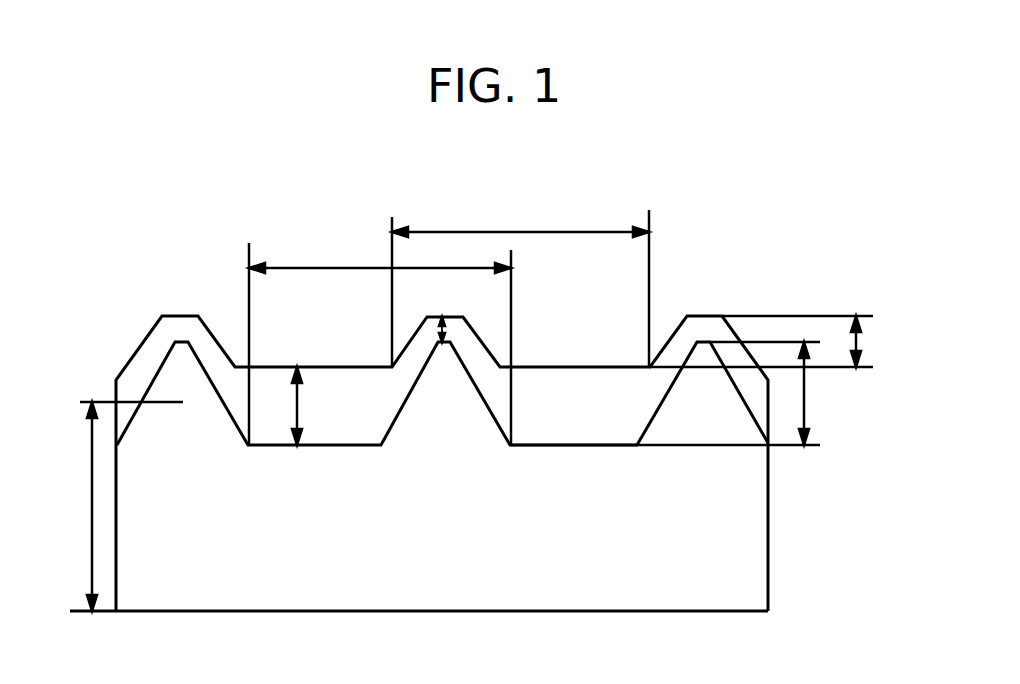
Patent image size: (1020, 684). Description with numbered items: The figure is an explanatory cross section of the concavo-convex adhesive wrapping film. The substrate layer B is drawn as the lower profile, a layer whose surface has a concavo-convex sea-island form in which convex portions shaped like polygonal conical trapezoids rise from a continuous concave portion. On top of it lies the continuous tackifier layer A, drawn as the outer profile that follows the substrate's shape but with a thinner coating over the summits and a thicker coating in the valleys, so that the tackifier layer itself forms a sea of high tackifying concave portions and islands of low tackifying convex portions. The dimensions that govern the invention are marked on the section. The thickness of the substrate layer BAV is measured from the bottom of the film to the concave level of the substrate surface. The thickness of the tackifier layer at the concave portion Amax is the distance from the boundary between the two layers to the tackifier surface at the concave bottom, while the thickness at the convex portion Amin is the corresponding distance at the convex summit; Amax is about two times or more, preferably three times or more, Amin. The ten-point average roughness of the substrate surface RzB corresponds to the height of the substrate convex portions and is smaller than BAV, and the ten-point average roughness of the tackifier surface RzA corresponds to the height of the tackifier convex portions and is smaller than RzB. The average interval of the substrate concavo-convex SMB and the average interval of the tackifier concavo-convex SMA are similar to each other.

The tackifier layer A is at (442, 463).
The substrate layer B is at (419, 476).
The average interval of the tackifier layer SMA is at (475, 208).
The average interval of the substrate layer SMB is at (297, 245).
The thickness of the tackifier layer at the convex portion Amin is at (449, 311).
The thickness of the tackifier layer at the concave portion Amax is at (326, 406).
The thickness of the substrate layer BAV is at (70, 506).
The ten-point average roughness of the tackifier layer surface RzA is at (867, 341).
The ten-point average roughness of the substrate layer surface RzB is at (822, 406).